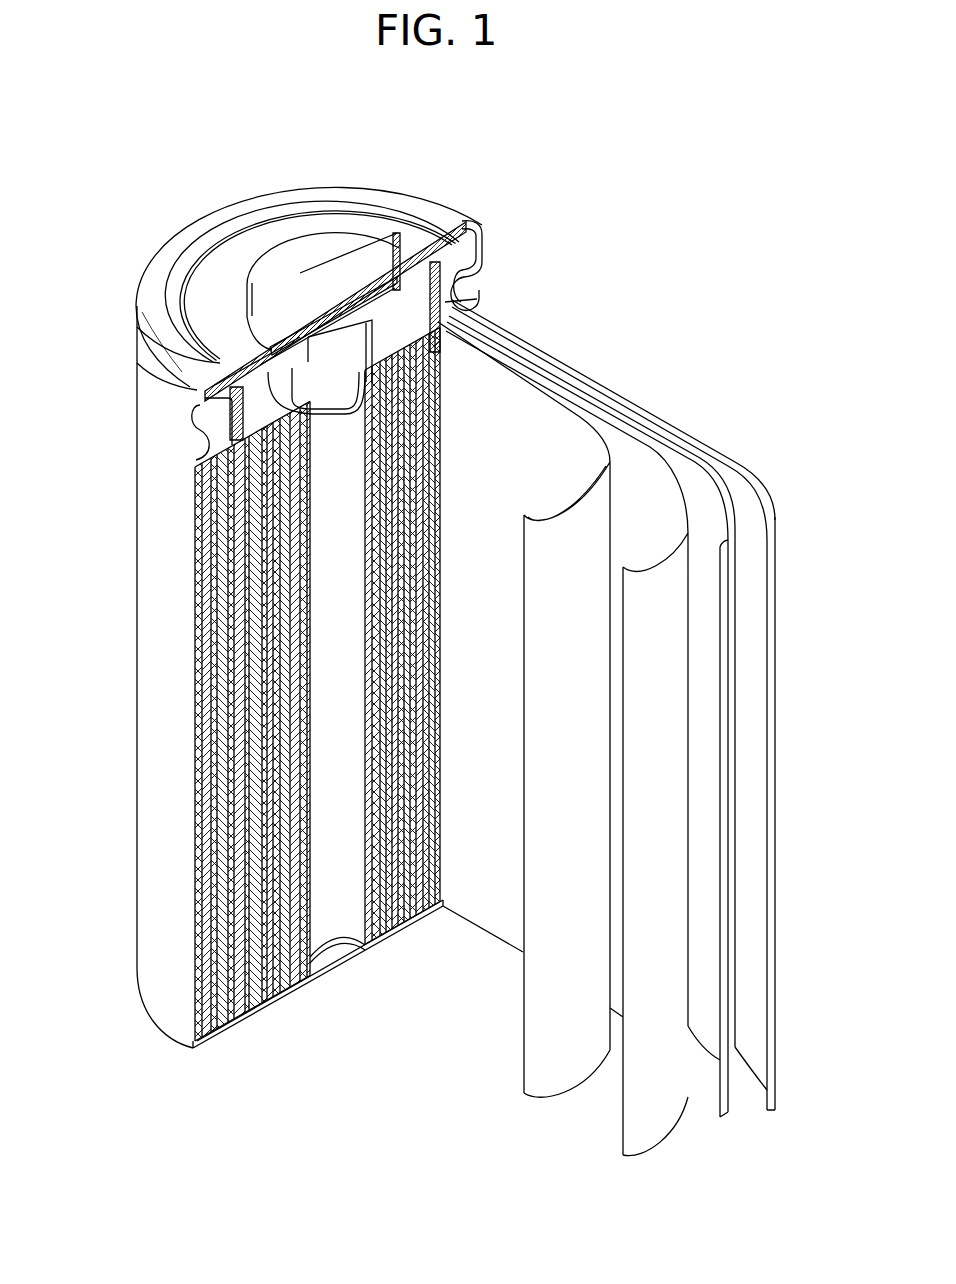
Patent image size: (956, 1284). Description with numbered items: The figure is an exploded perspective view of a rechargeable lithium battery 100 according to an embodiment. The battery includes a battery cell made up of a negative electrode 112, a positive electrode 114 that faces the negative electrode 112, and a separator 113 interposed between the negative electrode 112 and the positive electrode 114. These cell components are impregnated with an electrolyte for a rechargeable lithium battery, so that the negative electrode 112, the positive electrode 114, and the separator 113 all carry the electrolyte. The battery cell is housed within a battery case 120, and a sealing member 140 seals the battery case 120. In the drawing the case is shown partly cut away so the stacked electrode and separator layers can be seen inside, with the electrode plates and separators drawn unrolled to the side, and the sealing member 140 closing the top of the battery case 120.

The rechargeable lithium battery 100 is at (466, 193).
The negative electrode 112 is at (767, 510).
The separator 113 is at (509, 367).
The positive electrode 114 is at (635, 452).
The battery case 120 is at (160, 725).
The sealing member 140 is at (300, 240).